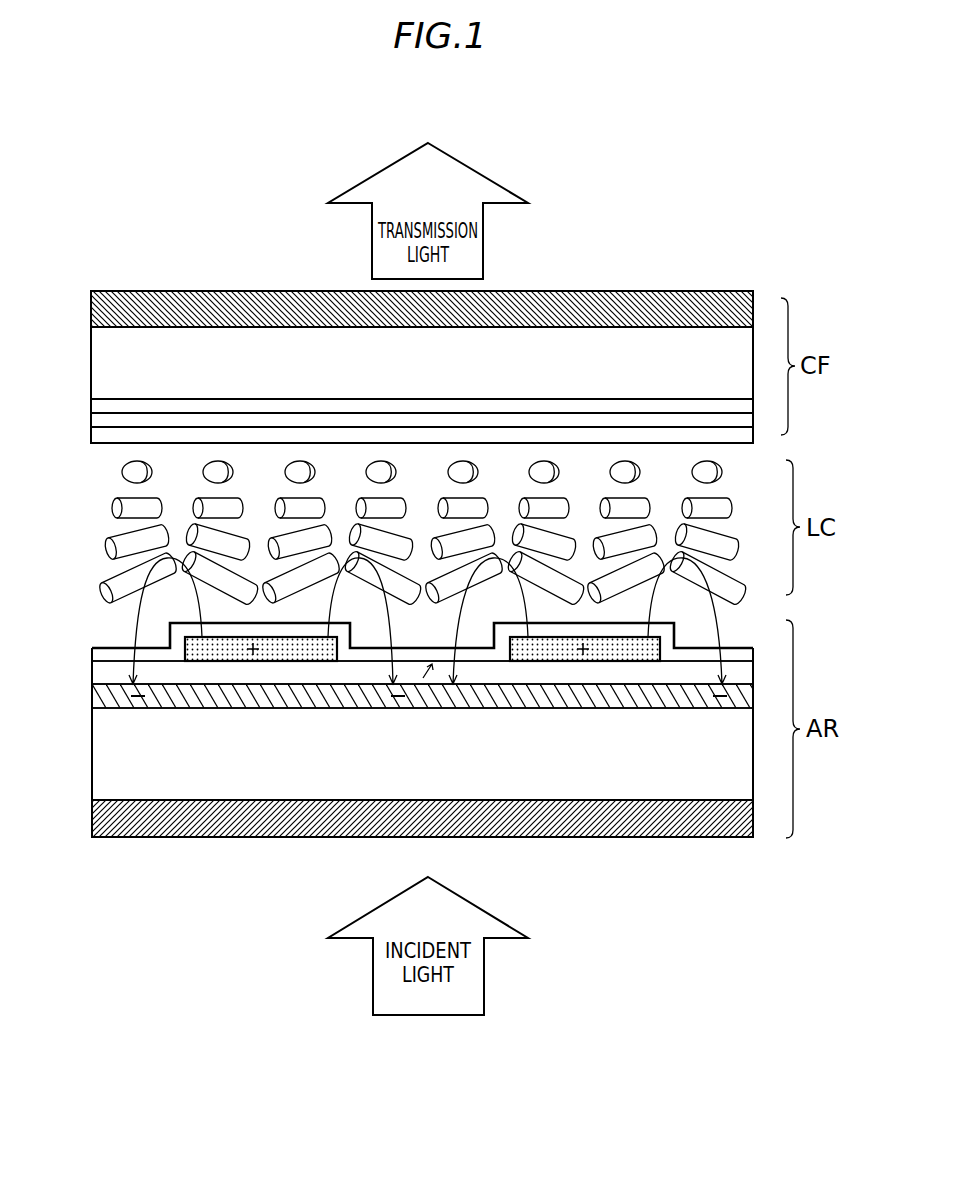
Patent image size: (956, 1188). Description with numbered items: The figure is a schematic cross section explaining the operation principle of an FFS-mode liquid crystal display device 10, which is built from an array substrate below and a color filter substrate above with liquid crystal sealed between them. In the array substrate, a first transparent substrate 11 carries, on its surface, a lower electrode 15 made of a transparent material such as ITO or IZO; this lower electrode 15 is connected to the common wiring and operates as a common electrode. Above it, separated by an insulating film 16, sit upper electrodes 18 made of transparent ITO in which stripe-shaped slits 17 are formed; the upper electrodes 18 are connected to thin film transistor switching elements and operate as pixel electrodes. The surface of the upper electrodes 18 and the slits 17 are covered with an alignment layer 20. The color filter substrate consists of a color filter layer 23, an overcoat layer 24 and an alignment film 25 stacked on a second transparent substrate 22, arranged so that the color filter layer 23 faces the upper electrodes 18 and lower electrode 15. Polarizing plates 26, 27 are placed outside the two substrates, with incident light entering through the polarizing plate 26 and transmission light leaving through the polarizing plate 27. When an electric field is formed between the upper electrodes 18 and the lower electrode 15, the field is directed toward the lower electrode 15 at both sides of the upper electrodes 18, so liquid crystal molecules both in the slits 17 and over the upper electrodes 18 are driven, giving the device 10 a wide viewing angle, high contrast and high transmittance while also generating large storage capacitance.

The FFS-mode liquid crystal display device 10 is at (146, 158).
The first transparent substrate 11 is at (136, 782).
The lower electrode 15 is at (343, 697).
The insulating film 16 is at (500, 672).
The slits 17 is at (418, 680).
The upper electrodes 18 is at (228, 650).
The alignment layer 20 is at (108, 655).
The second transparent substrate 22 is at (136, 374).
The color filter layer 23 is at (270, 410).
The overcoat layer 24 is at (381, 421).
The alignment film 25 is at (478, 438).
The polarizing plate 26 is at (195, 838).
The polarizing plate 27 is at (216, 292).